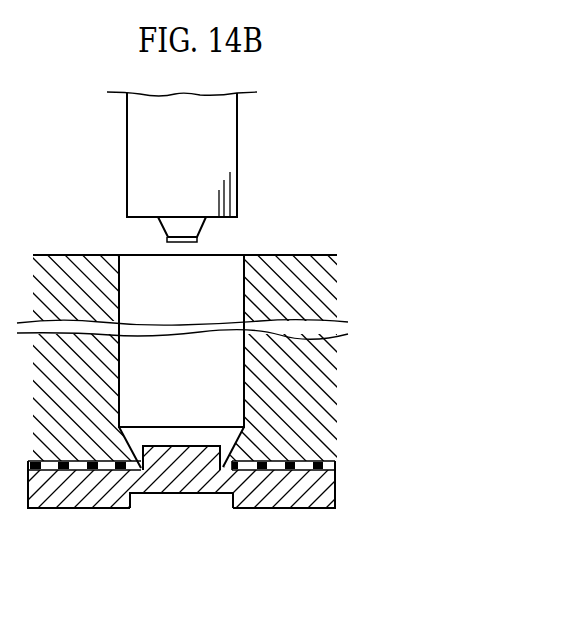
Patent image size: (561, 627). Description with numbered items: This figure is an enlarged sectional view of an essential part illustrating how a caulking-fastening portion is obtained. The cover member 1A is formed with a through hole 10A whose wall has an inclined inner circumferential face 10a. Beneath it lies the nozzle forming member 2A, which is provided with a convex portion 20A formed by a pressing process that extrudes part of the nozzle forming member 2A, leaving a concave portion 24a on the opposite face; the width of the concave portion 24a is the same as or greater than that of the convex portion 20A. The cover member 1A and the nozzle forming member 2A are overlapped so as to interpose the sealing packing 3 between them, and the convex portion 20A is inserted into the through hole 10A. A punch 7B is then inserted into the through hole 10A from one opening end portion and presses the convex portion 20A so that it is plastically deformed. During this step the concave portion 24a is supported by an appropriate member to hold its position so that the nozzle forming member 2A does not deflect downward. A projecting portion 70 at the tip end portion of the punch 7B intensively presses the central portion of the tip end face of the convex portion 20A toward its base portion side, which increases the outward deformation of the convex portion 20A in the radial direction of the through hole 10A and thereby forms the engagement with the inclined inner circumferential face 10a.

The punch 7B is at (220, 143).
The projecting portion 70 is at (160, 228).
The through hole 10A is at (227, 271).
The cover member 1A is at (311, 267).
The inclined inner circumferential face 10a is at (125, 440).
The convex portion 20A is at (190, 447).
The sealing packing 3 is at (327, 467).
The nozzle forming member 2A is at (275, 500).
The concave portion 24a is at (190, 498).